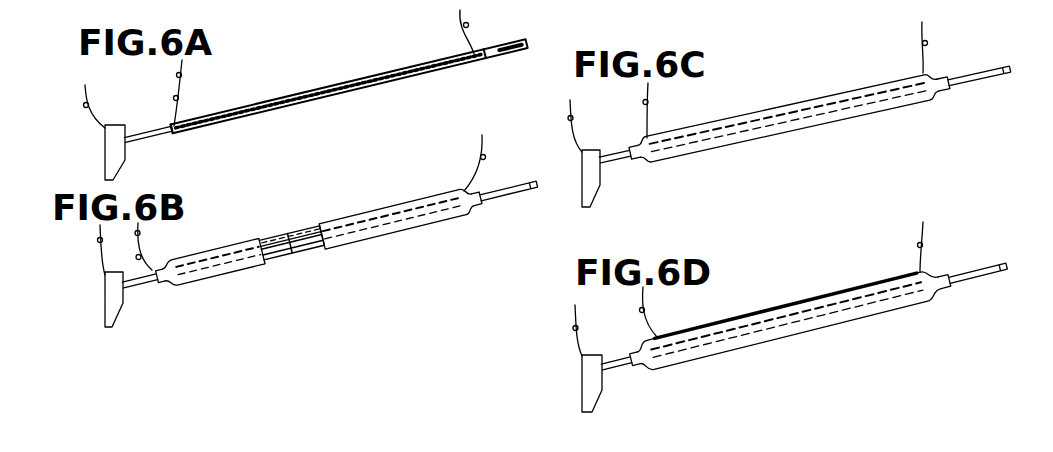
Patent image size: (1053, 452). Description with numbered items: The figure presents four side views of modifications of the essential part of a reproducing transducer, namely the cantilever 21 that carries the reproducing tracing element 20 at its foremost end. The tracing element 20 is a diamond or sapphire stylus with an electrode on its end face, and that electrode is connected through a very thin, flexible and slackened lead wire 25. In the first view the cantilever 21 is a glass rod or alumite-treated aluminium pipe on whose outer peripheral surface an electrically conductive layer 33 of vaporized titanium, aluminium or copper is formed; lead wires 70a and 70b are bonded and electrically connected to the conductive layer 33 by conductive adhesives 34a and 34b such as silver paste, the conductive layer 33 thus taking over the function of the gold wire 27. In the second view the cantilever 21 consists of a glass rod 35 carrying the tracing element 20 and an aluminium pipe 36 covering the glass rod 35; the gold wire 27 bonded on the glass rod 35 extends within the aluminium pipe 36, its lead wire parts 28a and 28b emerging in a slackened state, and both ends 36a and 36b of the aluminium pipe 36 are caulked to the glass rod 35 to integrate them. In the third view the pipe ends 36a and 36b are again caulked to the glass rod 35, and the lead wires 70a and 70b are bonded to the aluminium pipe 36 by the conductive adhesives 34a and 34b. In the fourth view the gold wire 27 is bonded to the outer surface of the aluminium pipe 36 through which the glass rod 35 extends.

In FIG. 6A, the reproducing tracing element 20 is at (105, 157).
In FIG. 6B, the reproducing tracing element 20 is at (105, 303).
In FIG. 6C, the reproducing tracing element 20 is at (598, 193).
In FIG. 6D, the reproducing tracing element 20 is at (581, 388).
In FIG. 6A, the cantilever 21 is at (147, 139).
In FIG. 6B, the cantilever 21 is at (282, 229).
In FIG. 6C, the cantilever 21 is at (775, 104).
In FIG. 6D, the cantilever 21 is at (833, 334).
In FIG. 6A, the lead wire 25 is at (85, 106).
In FIG. 6B, the lead wire 25 is at (97, 243).
In FIG. 6C, the lead wire 25 is at (567, 119).
In FIG. 6D, the lead wire 25 is at (573, 332).
In FIG. 6B, the gold wire 27 is at (292, 254).
In FIG. 6D, the gold wire 27 is at (803, 300).
In FIG. 6B, the lead wire part 28a is at (483, 158).
In FIG. 6D, the lead wire part 28a is at (926, 244).
In FIG. 6B, the lead wire part 28b is at (141, 235).
In FIG. 6D, the lead wire part 28b is at (650, 310).
In FIG. 6A, the electrically conductive layer 33 is at (352, 91).
In FIG. 6A, the conductive adhesive 34a is at (474, 55).
In FIG. 6C, the conductive adhesive 34a is at (920, 73).
In FIG. 6A, the conductive adhesive 34b is at (172, 127).
In FIG. 6C, the conductive adhesive 34b is at (647, 137).
In FIG. 6B, the glass rod 35 is at (513, 195).
In FIG. 6C, the glass rod 35 is at (977, 82).
In FIG. 6D, the glass rod 35 is at (617, 372).
In FIG. 6B, the aluminium pipe 36 is at (397, 231).
In FIG. 6C, the aluminium pipe 36 is at (827, 125).
In FIG. 6D, the aluminium pipe 36 is at (789, 320).
In FIG. 6B, the end of aluminium pipe 36a is at (472, 211).
In FIG. 6C, the end of aluminium pipe 36a is at (945, 92).
In FIG. 6D, the end of aluminium pipe 36a is at (947, 292).
In FIG. 6B, the end of aluminium pipe 36b is at (166, 287).
In FIG. 6C, the end of aluminium pipe 36b is at (647, 168).
In FIG. 6D, the end of aluminium pipe 36b is at (653, 373).
In FIG. 6A, the lead wire 70a is at (469, 24).
In FIG. 6C, the lead wire 70a is at (927, 43).
In FIG. 6A, the lead wire 70b is at (181, 82).
In FIG. 6C, the lead wire 70b is at (648, 101).